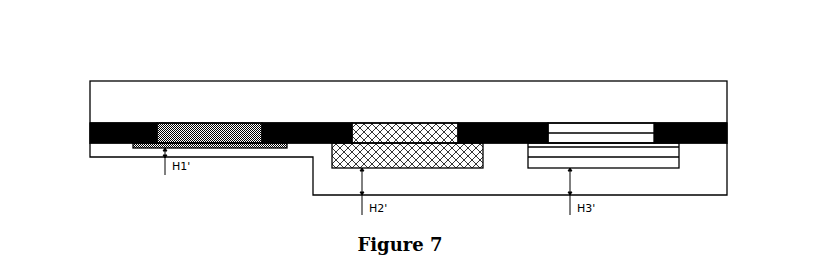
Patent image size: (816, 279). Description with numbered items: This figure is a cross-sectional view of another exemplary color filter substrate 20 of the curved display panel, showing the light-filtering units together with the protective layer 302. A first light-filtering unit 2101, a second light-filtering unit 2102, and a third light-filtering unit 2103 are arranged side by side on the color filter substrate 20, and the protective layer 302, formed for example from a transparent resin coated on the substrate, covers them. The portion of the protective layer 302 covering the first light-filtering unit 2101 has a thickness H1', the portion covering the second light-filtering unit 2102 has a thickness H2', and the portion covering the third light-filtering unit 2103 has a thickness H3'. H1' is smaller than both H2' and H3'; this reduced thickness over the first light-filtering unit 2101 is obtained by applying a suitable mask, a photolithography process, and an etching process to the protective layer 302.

The color filter substrate 20 is at (78, 82).
The first light-filtering unit 2101 is at (250, 123).
The second light-filtering unit 2102 is at (447, 125).
The third light-filtering unit 2103 is at (630, 143).
The protective layer 302 is at (707, 178).